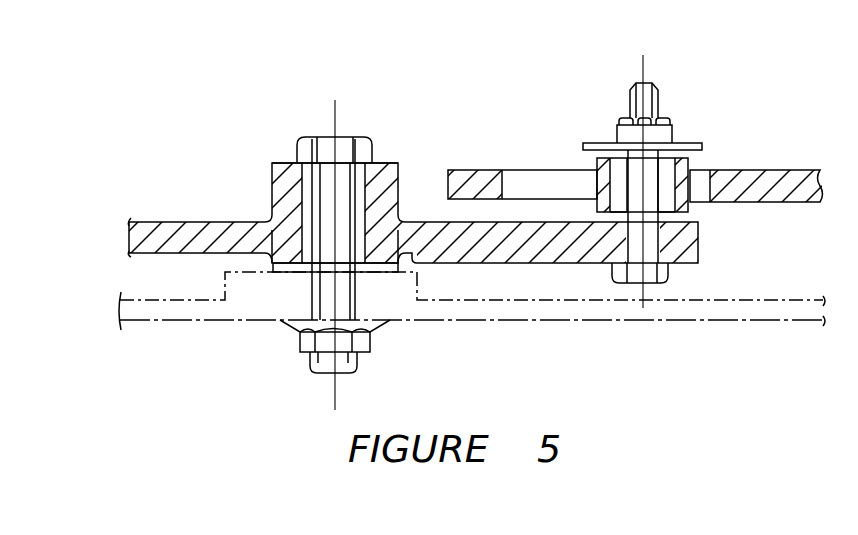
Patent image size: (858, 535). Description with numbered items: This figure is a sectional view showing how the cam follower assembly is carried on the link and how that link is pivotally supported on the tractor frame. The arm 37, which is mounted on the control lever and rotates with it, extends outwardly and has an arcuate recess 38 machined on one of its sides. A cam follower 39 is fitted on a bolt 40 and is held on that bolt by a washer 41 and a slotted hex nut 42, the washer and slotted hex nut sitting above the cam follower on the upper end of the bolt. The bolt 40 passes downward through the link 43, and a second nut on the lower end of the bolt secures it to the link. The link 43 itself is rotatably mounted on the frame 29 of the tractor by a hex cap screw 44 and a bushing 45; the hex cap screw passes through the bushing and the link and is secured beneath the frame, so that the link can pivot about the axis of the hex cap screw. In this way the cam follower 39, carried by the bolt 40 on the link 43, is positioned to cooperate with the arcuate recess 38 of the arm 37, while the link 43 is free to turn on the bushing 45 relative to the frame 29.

The frame 29 is at (516, 322).
The arm 37 is at (767, 203).
The arcuate recess 38 is at (512, 170).
The cam follower 39 is at (690, 165).
The bolt 40 is at (647, 84).
The washer 41 is at (594, 150).
The slotted hex nut 42 is at (672, 120).
The link 43 is at (145, 256).
The hex cap screw 44 is at (352, 137).
The bushing 45 is at (380, 178).